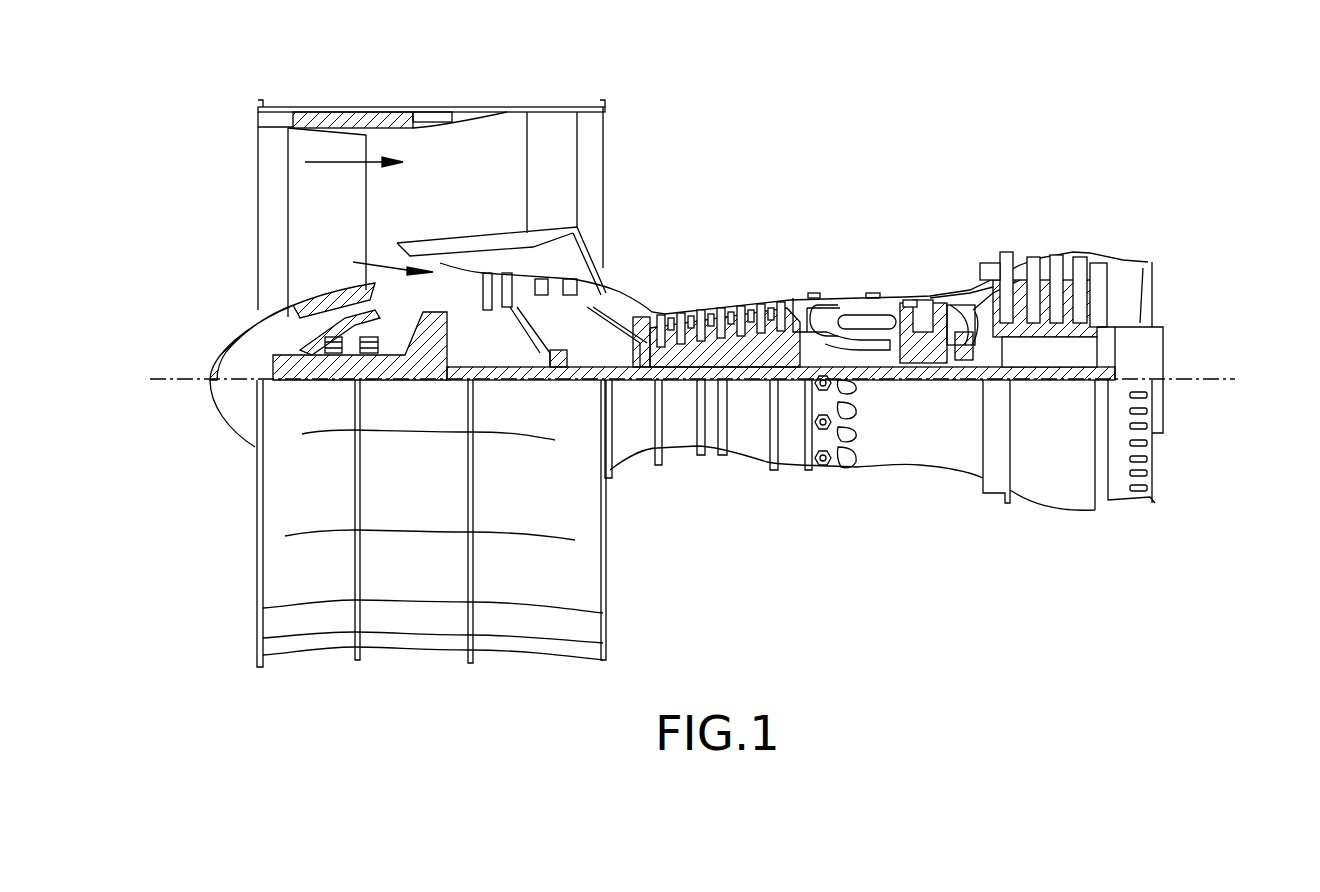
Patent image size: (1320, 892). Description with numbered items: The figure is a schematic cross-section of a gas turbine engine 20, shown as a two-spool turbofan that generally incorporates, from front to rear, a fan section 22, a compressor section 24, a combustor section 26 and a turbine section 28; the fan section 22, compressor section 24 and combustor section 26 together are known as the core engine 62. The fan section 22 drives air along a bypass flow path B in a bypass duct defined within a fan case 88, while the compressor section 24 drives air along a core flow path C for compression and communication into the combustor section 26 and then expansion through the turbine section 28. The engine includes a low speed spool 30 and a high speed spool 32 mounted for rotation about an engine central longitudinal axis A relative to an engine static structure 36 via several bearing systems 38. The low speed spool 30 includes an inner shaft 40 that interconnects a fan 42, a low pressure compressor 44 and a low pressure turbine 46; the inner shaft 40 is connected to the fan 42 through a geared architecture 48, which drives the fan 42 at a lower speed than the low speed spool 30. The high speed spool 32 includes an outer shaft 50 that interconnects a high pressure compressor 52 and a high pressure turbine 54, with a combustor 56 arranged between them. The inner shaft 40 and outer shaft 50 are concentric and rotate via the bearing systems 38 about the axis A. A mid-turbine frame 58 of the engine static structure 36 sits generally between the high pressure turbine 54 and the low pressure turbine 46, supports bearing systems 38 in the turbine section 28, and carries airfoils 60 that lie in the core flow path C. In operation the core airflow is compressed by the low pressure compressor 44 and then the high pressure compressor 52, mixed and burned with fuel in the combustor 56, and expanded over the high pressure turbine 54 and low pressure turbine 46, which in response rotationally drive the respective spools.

The gas turbine engine 20 is at (917, 97).
The fan section 22 is at (363, 86).
The compressor section 24 is at (646, 275).
The combustor section 26 is at (861, 264).
The turbine section 28 is at (1008, 196).
The low speed spool 30 is at (748, 397).
The high speed spool 32 is at (798, 345).
The engine static structure 36 is at (789, 480).
The bearing systems 38 is at (553, 360).
The inner shaft 40 is at (625, 385).
The fan 42 is at (333, 228).
The low pressure compressor 44 is at (600, 252).
The low pressure turbine 46 is at (1040, 265).
The geared architecture 48 is at (433, 365).
The outer shaft 50 is at (865, 360).
The high pressure compressor 52 is at (690, 315).
The high pressure turbine 54 is at (918, 302).
The combustor 56 is at (857, 320).
The mid-turbine frame 58 is at (957, 268).
The airfoils 60 is at (965, 318).
The core engine 62 is at (750, 269).
The fan case 88 is at (433, 110).
The engine central longitudinal axis A is at (1198, 380).
The bypass flow path B is at (313, 162).
The core flow path C is at (384, 263).